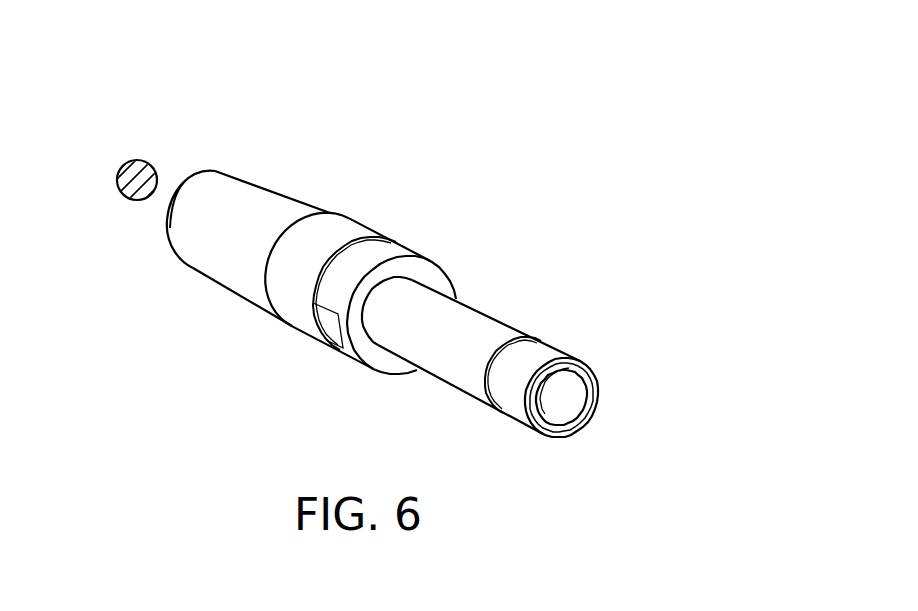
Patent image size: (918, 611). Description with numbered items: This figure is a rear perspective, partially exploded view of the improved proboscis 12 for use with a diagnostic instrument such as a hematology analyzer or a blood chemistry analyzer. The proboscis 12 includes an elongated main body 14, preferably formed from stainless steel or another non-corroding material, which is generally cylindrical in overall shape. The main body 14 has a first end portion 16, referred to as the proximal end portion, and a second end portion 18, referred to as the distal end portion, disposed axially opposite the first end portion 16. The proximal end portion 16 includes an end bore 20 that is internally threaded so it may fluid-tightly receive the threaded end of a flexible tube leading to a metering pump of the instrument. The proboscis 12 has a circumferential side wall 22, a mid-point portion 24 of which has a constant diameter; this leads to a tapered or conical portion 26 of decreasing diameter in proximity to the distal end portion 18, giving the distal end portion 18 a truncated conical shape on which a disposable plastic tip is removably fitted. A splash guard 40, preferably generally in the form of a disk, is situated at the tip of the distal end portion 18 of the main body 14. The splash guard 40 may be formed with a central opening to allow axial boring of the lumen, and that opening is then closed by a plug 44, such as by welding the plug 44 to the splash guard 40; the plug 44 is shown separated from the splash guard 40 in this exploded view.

The proboscis 12 is at (518, 87).
The main body 14 is at (346, 216).
The first end portion 16 is at (550, 346).
The second end portion 18 is at (278, 193).
The end bore 20 is at (571, 408).
The circumferential side wall 22 is at (475, 307).
The mid-point portion 24 is at (300, 325).
The tapered or conical portion 26 is at (205, 266).
The splash guard 40 is at (184, 182).
The plug 44 is at (132, 161).